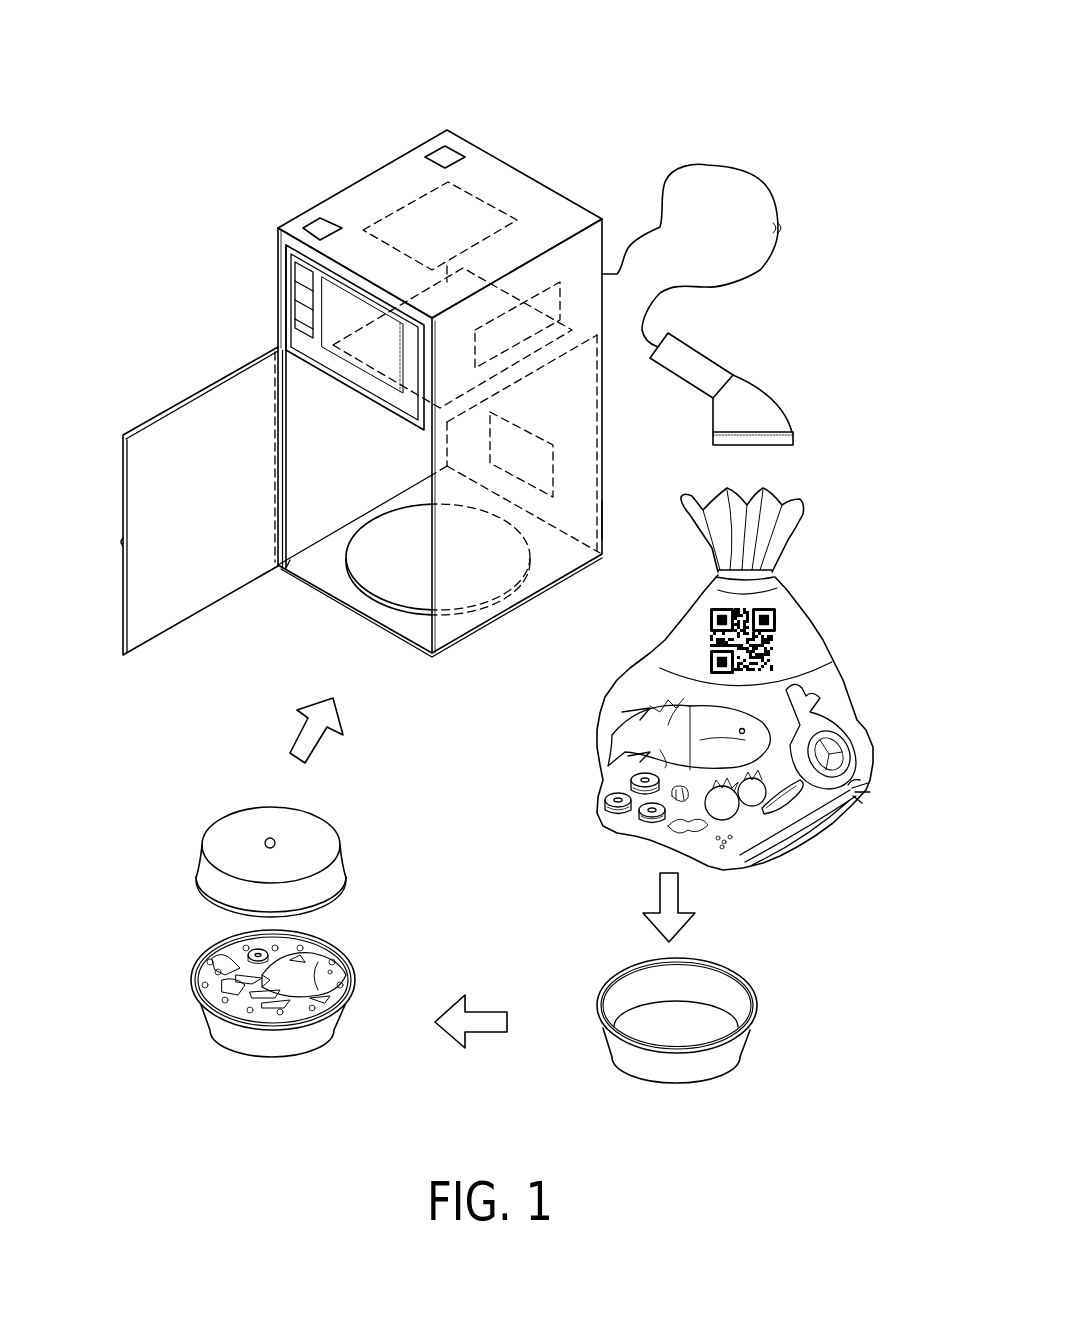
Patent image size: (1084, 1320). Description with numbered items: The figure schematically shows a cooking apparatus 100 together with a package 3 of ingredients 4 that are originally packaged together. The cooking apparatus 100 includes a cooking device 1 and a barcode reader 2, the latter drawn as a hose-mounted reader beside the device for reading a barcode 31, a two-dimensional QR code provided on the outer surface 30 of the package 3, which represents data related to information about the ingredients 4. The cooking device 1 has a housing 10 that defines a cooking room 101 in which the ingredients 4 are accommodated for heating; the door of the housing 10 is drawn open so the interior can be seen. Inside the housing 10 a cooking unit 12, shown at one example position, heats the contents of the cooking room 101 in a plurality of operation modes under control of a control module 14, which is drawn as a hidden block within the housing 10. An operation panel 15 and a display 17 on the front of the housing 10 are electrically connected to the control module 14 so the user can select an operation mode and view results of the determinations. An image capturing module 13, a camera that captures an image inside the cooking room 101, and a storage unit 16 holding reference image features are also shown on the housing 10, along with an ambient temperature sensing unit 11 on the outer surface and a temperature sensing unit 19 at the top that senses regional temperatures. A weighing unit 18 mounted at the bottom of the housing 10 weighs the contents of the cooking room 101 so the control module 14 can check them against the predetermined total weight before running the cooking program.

The cooking apparatus 100 is at (655, 98).
The cooking device 1 is at (385, 196).
The housing 10 is at (603, 517).
The cooking room 101 is at (330, 576).
The ambient temperature sensing unit 11 is at (444, 157).
The cooking unit 12 is at (545, 470).
The image capturing module 13 is at (462, 222).
The control module 14 is at (548, 285).
The operation panel 15 is at (297, 290).
The storage unit 16 is at (320, 228).
The display 17 is at (344, 312).
The weighing unit 18 is at (414, 588).
The temperature sensing unit 19 is at (277, 391).
The barcode reader 2 is at (782, 407).
The package 3 is at (622, 666).
The outer surface 30 is at (808, 640).
The barcode 31 is at (713, 662).
The ingredients 4 is at (653, 738).